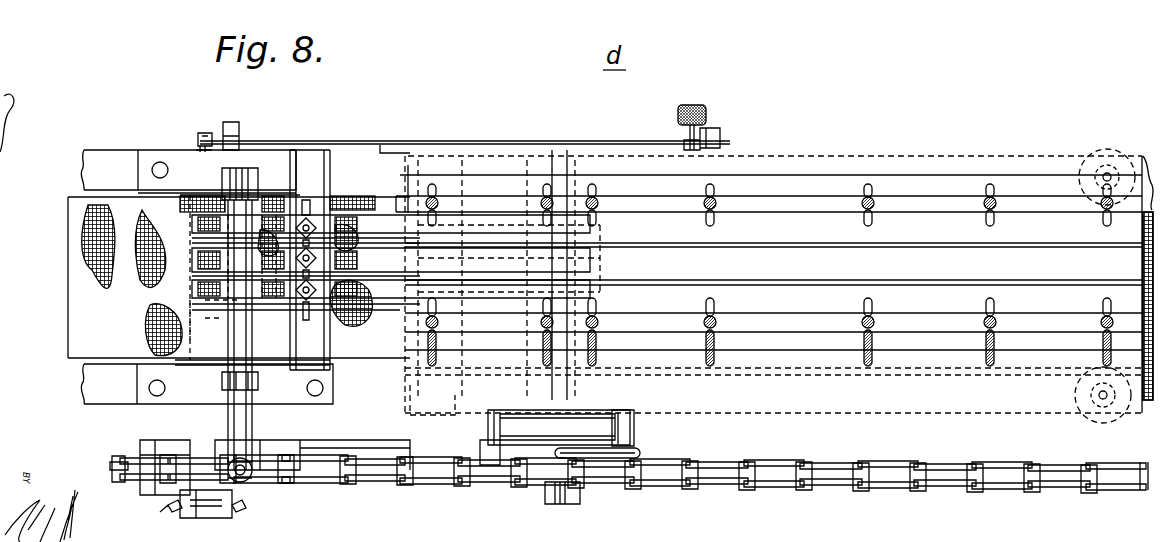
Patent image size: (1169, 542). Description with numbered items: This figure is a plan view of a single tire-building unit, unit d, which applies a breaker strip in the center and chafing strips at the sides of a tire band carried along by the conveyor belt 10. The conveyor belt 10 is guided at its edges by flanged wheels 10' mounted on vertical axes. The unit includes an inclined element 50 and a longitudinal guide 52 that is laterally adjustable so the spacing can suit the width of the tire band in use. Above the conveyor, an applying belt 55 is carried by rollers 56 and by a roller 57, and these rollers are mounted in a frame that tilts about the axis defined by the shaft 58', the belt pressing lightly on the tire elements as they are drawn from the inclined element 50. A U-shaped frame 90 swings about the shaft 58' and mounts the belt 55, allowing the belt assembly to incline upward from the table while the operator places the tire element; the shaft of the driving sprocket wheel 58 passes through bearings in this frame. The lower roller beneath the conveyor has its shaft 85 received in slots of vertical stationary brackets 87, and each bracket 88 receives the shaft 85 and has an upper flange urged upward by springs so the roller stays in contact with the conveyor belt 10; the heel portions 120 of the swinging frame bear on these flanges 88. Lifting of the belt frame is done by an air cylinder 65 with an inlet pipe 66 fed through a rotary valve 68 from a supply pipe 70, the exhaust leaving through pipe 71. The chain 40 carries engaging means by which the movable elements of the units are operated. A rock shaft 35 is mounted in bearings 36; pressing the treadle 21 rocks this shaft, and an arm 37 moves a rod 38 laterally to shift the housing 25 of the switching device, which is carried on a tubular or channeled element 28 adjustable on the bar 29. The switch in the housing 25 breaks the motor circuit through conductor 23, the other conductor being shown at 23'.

The conveyor belt 10 is at (221, 277).
The flanged wheels 10' is at (1100, 282).
The treadle 21 is at (702, 108).
The conductor 23 is at (154, 516).
The conductor 23' is at (246, 515).
The housing 25 is at (212, 518).
The tubular or channeled element 28 is at (262, 446).
The bar 29 is at (170, 445).
The rock shaft 35 is at (275, 142).
The bearings 36 is at (236, 124).
The arm 37 is at (207, 132).
The rod 38 is at (200, 147).
The chain 40 is at (870, 490).
The inclined element 50 is at (870, 156).
The guide 52 is at (766, 218).
The belt 55 is at (192, 226).
The rollers 56 is at (520, 228).
The roller 57 is at (148, 316).
The driving sprocket wheel 58 is at (262, 491).
The shaft 58' is at (220, 381).
The cylinder 65 is at (500, 432).
The inlet pipe 66 is at (634, 432).
The rotary valve 68 is at (578, 490).
The pipe 70 is at (640, 454).
The pipe 71 is at (500, 458).
The shaft 85 is at (222, 172).
The brackets 87 is at (152, 197).
The bracket 88 is at (165, 151).
The U-shaped frame 90 is at (316, 352).
The heel portions 120 is at (180, 188).